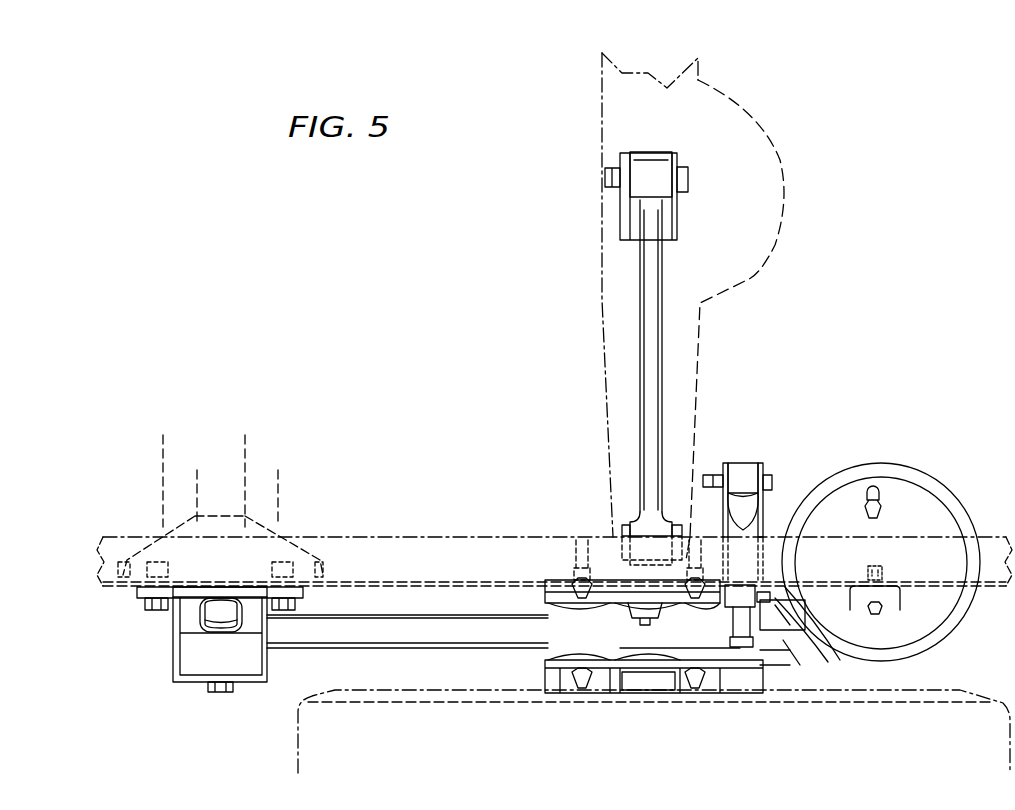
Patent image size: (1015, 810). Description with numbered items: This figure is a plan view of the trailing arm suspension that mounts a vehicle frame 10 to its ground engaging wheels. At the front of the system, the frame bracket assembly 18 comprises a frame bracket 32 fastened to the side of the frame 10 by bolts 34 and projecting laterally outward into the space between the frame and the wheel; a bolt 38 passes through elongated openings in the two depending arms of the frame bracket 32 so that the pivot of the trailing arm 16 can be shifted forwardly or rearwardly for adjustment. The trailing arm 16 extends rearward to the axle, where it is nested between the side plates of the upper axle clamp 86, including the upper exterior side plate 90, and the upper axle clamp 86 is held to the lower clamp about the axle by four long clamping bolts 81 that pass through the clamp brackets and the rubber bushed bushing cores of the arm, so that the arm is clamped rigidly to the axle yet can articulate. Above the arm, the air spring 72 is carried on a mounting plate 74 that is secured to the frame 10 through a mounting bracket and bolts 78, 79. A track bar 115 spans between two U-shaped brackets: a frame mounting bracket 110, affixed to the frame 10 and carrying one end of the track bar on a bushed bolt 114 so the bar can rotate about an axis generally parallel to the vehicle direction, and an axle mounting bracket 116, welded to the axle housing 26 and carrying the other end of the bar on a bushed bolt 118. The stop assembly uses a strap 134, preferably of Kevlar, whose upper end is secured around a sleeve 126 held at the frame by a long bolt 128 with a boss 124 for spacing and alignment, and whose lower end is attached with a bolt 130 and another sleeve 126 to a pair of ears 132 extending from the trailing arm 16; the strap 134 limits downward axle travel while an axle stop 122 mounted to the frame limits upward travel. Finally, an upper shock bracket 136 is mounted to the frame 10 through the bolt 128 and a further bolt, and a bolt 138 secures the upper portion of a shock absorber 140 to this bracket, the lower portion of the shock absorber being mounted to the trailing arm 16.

The vehicle frame 10 is at (405, 550).
The trailing arm 16 is at (478, 630).
The frame bracket assembly 18 is at (160, 666).
The axle housing 26 is at (783, 185).
The frame bracket 32 is at (267, 662).
The bolts 34 is at (157, 612).
The bolt 38 is at (222, 692).
The air spring 72 is at (960, 518).
The mounting plate 74 is at (920, 507).
The bolts 78 is at (886, 507).
The bolts 79 is at (888, 573).
The clamping bolts 81 is at (560, 540).
The upper axle clamp 86 is at (545, 663).
The upper exterior side plate 90 is at (752, 698).
The frame mounting bracket 110 is at (626, 533).
The bushed bolt 114 is at (706, 531).
The track bar 115 is at (662, 275).
The axle mounting bracket 116 is at (620, 225).
The bushed bolt 118 is at (605, 177).
The axle stop 122 is at (640, 610).
The boss 124 is at (777, 580).
The sleeve 126 is at (730, 625).
The long bolt 128 is at (720, 648).
The bolt 130 is at (770, 650).
The ears 132 is at (803, 602).
The strap 134 is at (797, 632).
The upper shock bracket 136 is at (770, 525).
The bolt 138 is at (768, 480).
The shock absorber 140 is at (765, 476).